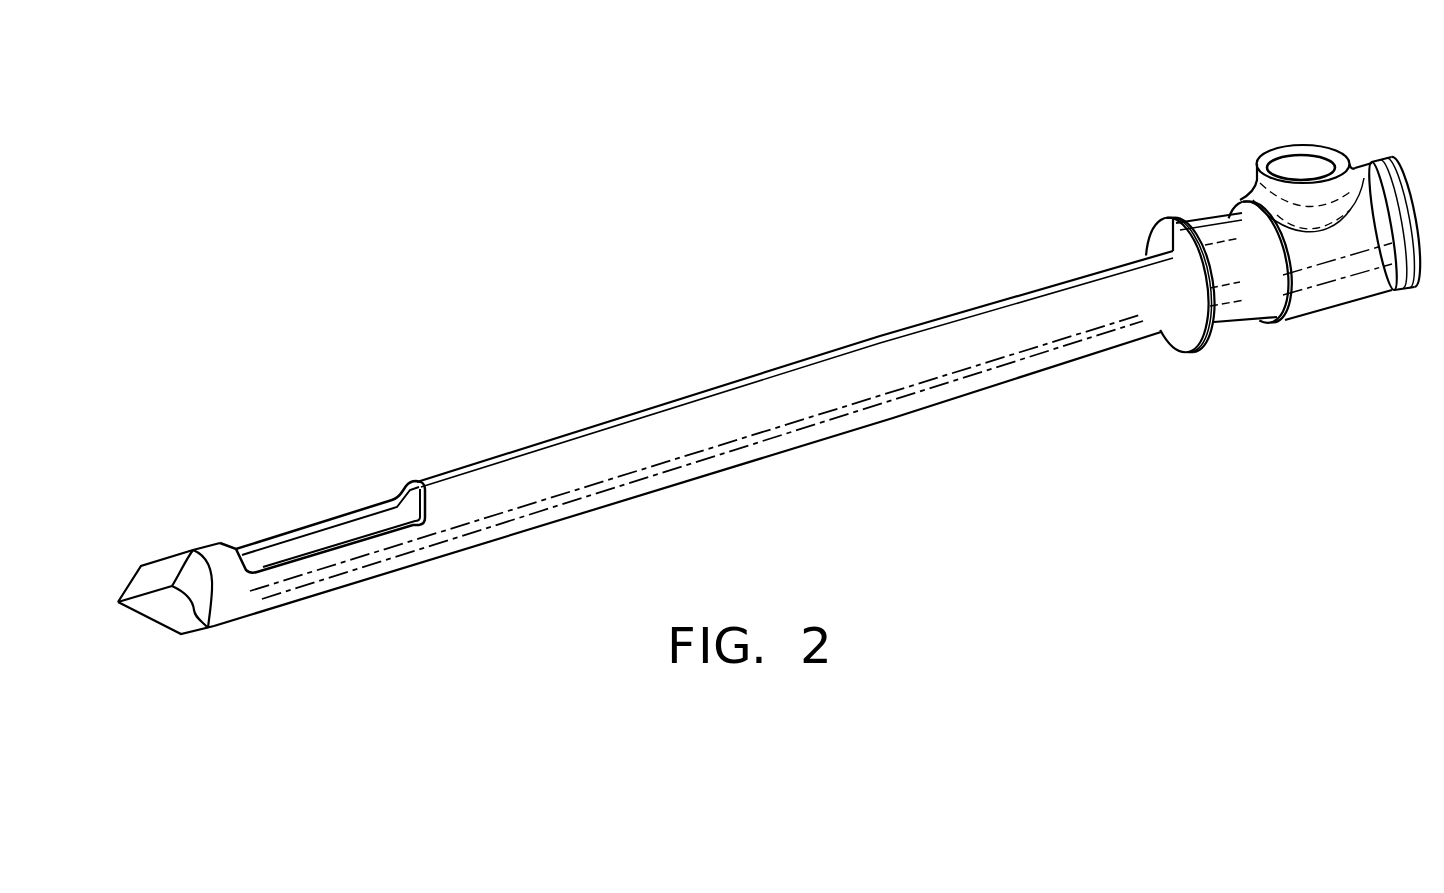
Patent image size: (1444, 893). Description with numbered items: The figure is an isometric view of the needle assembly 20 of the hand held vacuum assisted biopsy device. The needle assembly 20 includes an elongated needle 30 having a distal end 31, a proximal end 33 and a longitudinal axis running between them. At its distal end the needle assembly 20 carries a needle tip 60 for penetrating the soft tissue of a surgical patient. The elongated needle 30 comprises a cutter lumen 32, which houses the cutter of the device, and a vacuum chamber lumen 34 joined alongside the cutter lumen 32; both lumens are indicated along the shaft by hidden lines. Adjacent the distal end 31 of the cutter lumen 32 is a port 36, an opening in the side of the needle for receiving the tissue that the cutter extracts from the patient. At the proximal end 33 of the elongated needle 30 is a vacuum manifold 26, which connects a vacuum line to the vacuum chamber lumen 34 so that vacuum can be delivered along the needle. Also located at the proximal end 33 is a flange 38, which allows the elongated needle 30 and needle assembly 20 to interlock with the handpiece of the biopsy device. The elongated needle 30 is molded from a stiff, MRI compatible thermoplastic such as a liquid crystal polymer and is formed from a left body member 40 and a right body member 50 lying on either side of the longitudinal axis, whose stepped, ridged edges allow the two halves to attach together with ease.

The needle assembly 20 is at (770, 200).
The vacuum manifold 26 is at (1302, 168).
The elongated needle 30 is at (800, 470).
The distal end 31 is at (140, 518).
The cutter lumen 32 is at (612, 447).
The proximal end 33 is at (1128, 152).
The vacuum chamber lumen 34 is at (637, 482).
The port 36 is at (347, 530).
The flange 38 is at (1163, 233).
The left body member 40 is at (978, 351).
The right body member 50 is at (962, 307).
The needle tip 60 is at (177, 607).